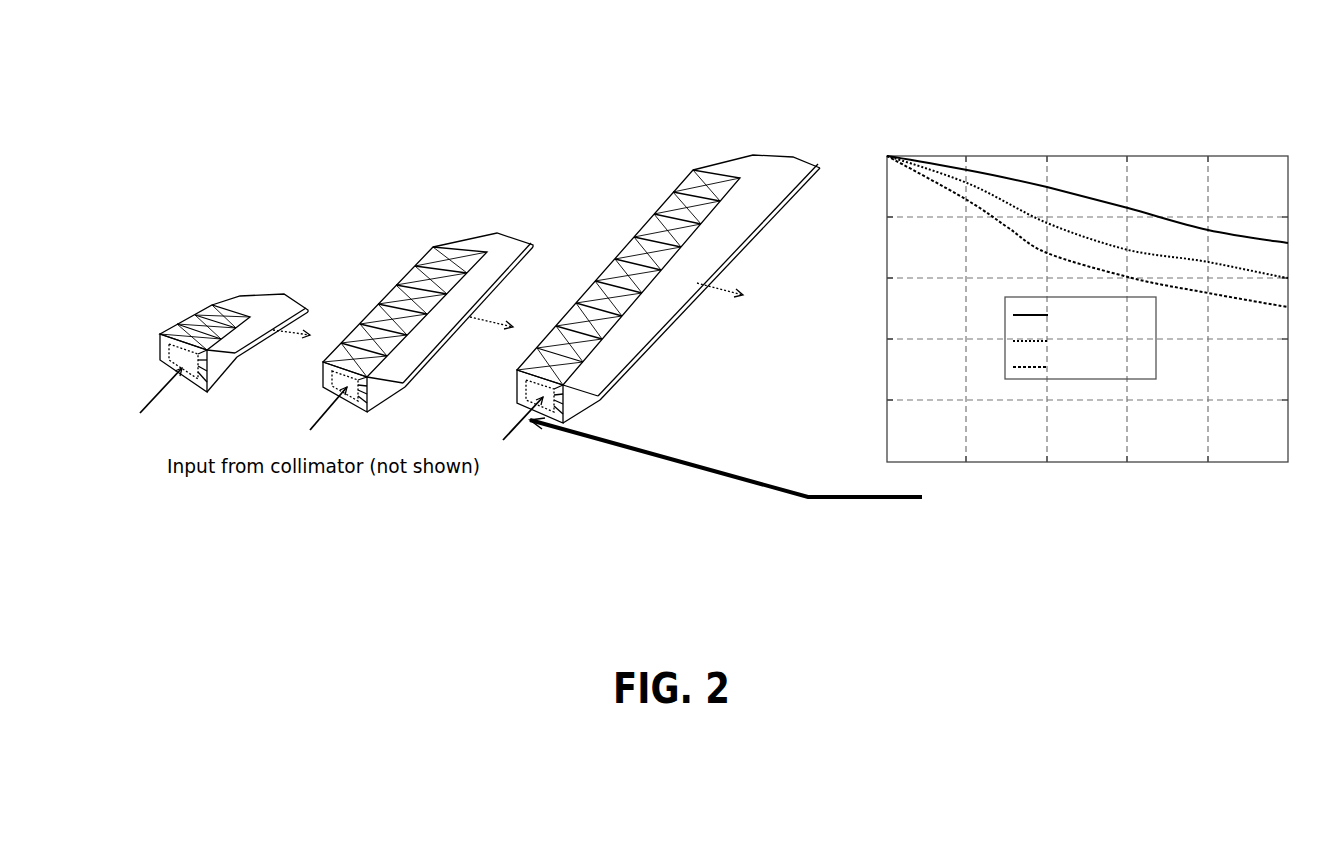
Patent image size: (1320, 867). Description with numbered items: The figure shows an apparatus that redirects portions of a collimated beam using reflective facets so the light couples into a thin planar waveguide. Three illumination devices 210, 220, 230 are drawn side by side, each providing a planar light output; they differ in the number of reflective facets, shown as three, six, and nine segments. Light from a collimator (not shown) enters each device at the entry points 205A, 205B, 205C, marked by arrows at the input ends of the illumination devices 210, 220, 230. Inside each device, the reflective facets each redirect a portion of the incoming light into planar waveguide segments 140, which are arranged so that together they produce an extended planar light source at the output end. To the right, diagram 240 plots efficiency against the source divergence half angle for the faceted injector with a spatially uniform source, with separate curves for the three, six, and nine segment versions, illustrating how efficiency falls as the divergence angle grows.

The planar waveguide segments 140 is at (308, 307).
The light entry point 205A is at (150, 398).
The light entry point 205B is at (313, 418).
The light entry point 205C is at (510, 430).
The illumination device 210 is at (397, 284).
The illumination device 220 is at (480, 228).
The illumination device 230 is at (733, 158).
The diagram 240 is at (1083, 117).